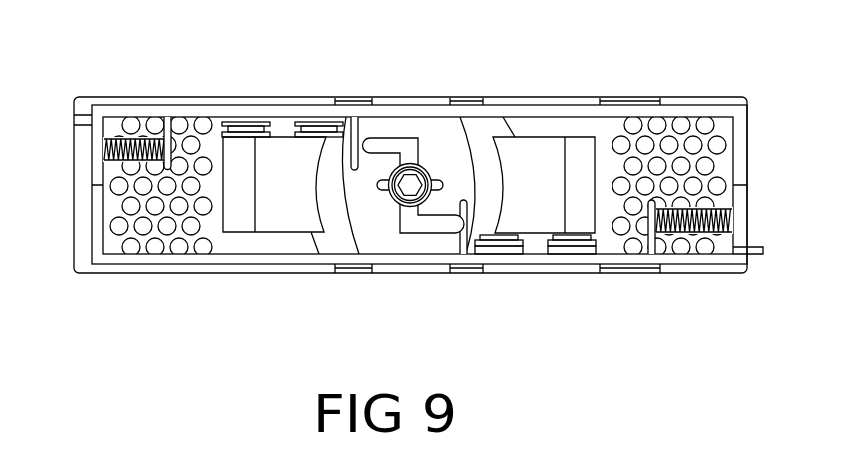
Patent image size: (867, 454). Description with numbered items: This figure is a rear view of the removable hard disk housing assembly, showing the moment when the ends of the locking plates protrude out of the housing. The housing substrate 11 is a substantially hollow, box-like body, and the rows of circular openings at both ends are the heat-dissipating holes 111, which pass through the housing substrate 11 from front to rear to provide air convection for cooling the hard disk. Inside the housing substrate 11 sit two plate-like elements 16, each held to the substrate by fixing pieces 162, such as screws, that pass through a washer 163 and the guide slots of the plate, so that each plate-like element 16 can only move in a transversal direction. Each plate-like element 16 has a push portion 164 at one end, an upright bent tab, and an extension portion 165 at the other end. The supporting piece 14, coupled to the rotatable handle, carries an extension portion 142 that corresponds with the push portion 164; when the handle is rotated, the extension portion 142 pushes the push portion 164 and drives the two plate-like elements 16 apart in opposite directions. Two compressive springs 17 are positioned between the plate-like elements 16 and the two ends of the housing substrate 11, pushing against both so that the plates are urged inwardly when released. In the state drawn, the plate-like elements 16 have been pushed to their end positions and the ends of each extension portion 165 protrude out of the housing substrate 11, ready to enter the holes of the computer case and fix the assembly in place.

The housing substrate 11 is at (152, 288).
The heat-dissipating holes 111 is at (203, 256).
The supporting piece 14 is at (408, 192).
The extension portion 142 is at (384, 143).
The plate-like element 16 is at (218, 110).
The fixing piece 162 is at (312, 128).
The washer 163 is at (322, 128).
The push portion 164 is at (357, 116).
The extension portion 165 is at (83, 120).
The compressive spring 17 is at (145, 125).